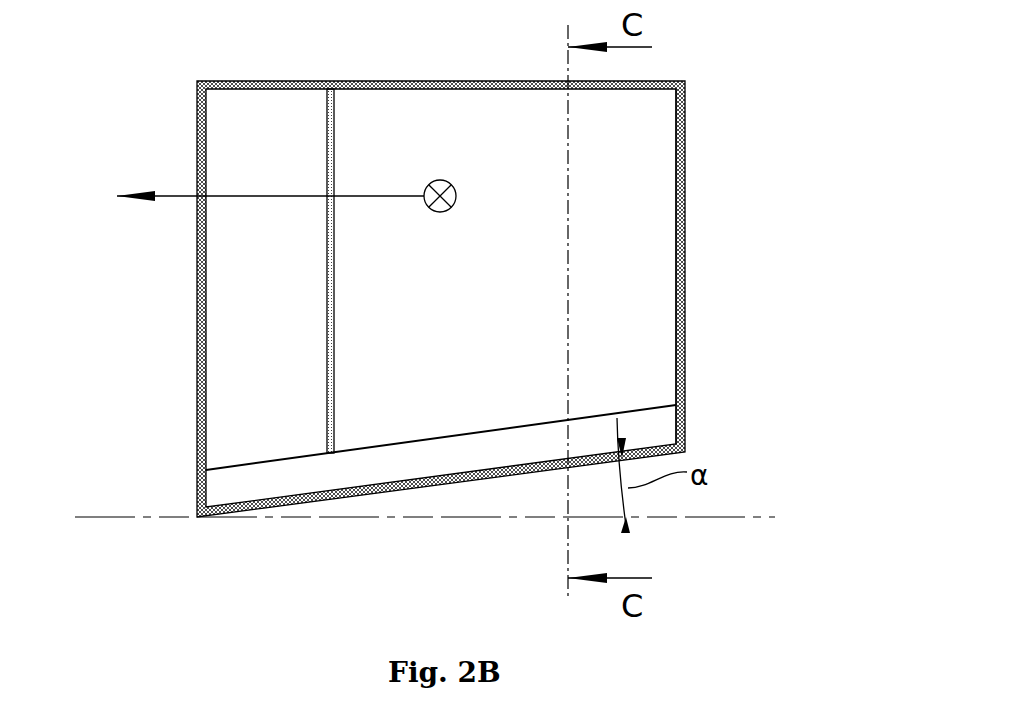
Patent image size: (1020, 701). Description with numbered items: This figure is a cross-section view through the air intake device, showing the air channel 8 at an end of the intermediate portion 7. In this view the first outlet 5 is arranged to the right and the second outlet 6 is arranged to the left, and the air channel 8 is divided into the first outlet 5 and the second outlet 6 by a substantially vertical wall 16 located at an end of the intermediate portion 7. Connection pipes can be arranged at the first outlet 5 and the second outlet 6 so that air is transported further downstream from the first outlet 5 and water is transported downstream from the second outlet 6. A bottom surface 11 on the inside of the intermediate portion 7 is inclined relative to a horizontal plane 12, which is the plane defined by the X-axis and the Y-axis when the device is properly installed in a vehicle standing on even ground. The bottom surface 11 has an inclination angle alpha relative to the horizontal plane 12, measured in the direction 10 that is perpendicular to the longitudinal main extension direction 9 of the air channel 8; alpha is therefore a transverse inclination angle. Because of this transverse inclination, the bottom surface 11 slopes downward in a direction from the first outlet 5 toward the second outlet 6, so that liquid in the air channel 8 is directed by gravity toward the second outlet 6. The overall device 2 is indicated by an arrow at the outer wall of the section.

The hull / vessel body 2 is at (712, 178).
The first outlet 5 is at (633, 152).
The second outlet 6 is at (245, 155).
The intermediate portion 7 is at (685, 247).
The air channel 8 is at (632, 345).
The longitudinal main extension direction 9 is at (440, 180).
The direction 10 is at (180, 198).
The bottom surface 11 is at (500, 464).
The horizontal plane 12 is at (118, 515).
The substantially vertical wall 16 is at (326, 360).